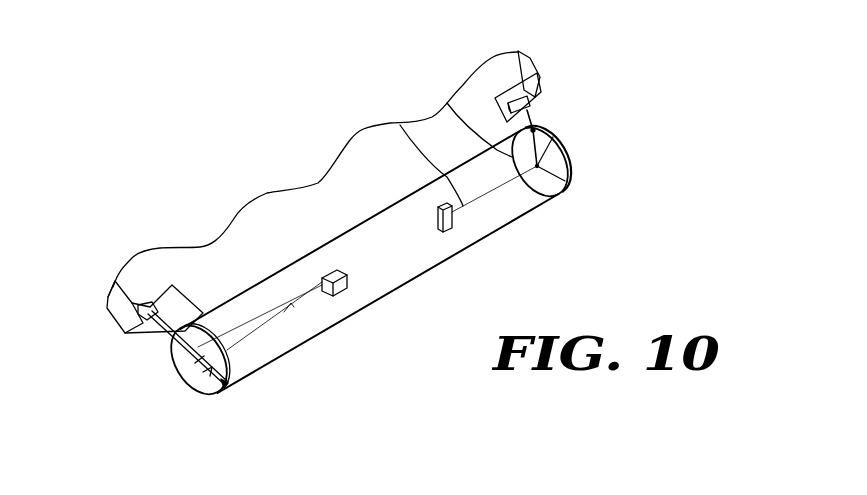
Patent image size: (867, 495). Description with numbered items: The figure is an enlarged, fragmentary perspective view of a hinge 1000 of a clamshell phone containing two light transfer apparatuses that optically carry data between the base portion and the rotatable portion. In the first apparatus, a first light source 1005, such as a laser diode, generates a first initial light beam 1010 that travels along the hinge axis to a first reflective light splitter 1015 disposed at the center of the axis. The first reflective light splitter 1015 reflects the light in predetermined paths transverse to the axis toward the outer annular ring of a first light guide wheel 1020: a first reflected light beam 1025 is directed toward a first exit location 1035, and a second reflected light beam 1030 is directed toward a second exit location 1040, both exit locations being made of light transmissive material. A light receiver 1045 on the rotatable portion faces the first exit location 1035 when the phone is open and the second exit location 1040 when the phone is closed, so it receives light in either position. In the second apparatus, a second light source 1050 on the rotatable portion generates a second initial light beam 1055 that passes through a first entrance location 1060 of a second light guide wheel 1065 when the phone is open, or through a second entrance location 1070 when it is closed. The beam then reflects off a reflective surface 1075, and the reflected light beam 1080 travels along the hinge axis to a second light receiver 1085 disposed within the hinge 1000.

The hinge 1000 is at (487, 233).
The first light source 1005 is at (335, 270).
The first initial light beam 1010 is at (270, 313).
The first reflective light splitter 1015 is at (198, 370).
The first light guide wheel 1020 is at (183, 381).
The first reflected light beam 1025 is at (172, 362).
The second reflected light beam 1030 is at (207, 378).
The first exit location 1035 is at (185, 328).
The second exit location 1040 is at (228, 384).
The light receiver 1045 is at (160, 283).
The second light source 1050 is at (533, 63).
The second initial light beam 1055 is at (528, 108).
The first entrance location 1060 is at (540, 131).
The second light guide wheel 1065 is at (562, 160).
The second entrance location 1070 is at (566, 181).
The reflective surface 1075 is at (447, 103).
The reflected light beam 1080 is at (390, 123).
The second light receiver 1085 is at (441, 232).